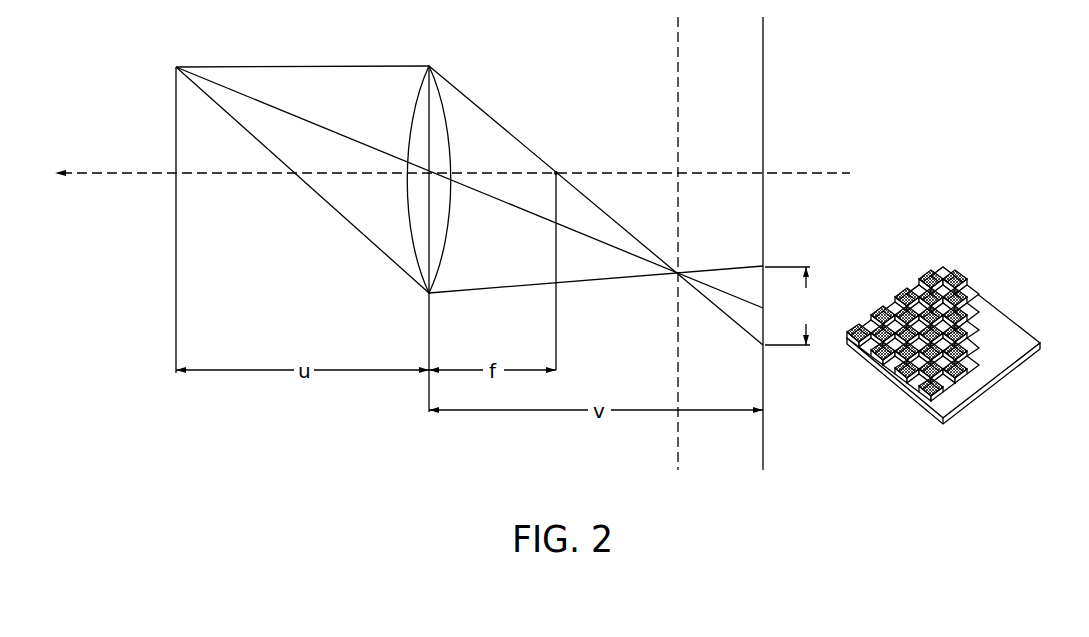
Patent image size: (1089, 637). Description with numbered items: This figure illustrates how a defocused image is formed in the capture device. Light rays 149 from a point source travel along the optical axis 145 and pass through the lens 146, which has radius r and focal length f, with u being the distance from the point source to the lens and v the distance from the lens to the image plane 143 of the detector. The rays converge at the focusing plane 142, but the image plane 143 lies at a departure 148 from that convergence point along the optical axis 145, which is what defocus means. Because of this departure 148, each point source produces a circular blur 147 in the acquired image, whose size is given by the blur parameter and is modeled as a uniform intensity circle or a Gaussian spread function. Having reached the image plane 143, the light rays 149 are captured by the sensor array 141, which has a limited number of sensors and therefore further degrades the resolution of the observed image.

The sensor array 141 is at (993, 312).
The focusing plane 142 is at (678, 432).
The image plane 143 is at (768, 432).
The optical axis 145 is at (117, 175).
The lens 146 is at (415, 203).
The circular blur 147 is at (795, 306).
The departure 148 is at (177, 120).
The light rays 149 is at (330, 131).